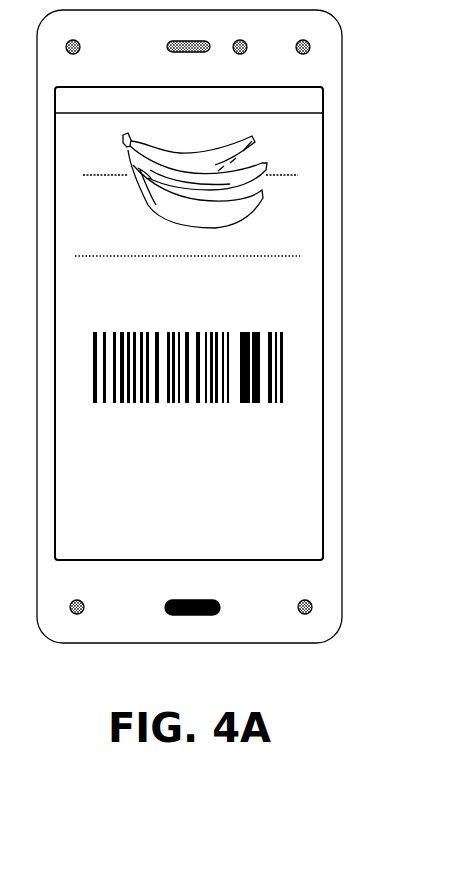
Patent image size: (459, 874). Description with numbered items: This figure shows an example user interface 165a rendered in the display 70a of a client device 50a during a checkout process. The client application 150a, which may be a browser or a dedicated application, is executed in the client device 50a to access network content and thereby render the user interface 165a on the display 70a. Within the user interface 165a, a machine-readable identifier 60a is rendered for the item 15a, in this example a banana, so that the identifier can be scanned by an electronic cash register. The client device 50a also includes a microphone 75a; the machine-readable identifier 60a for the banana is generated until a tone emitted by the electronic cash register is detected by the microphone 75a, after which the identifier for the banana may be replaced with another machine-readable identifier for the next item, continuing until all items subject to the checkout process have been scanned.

The client device 50a is at (342, 103).
The display 70a is at (323, 148).
The microphone 75a is at (278, 644).
The client application 150a is at (189, 103).
The item 15a is at (240, 237).
The machine-readable identifier 60a is at (252, 402).
The user interface 165a is at (303, 542).